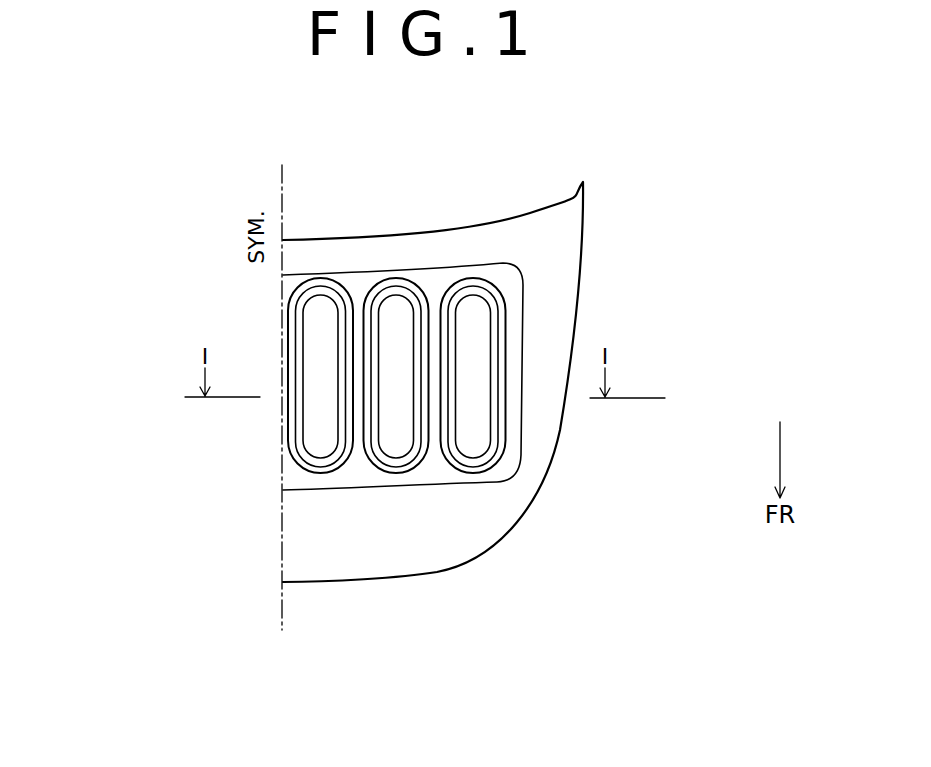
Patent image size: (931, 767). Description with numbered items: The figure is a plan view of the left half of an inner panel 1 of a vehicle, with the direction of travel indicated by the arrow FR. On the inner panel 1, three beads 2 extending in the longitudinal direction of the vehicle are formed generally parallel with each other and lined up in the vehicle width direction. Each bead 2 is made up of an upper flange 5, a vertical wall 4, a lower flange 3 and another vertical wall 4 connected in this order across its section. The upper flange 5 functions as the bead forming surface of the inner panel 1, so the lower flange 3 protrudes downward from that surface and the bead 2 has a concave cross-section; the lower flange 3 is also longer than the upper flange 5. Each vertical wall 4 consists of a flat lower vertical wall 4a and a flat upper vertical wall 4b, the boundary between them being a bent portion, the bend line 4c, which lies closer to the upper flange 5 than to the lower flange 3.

The inner panel 1 is at (533, 262).
The bead 2 is at (390, 429).
The lower flange 3 is at (317, 345).
The vertical wall 4 is at (431, 416).
The lower vertical wall 4a is at (429, 429).
The upper vertical wall 4b is at (498, 415).
The bend line 4c is at (503, 362).
The upper flange 5 is at (366, 290).